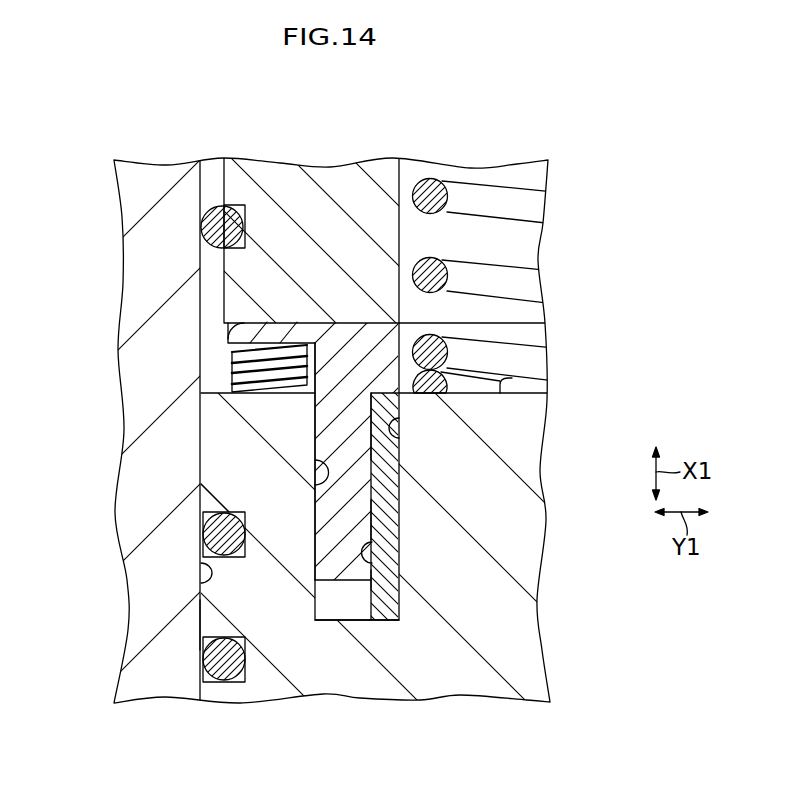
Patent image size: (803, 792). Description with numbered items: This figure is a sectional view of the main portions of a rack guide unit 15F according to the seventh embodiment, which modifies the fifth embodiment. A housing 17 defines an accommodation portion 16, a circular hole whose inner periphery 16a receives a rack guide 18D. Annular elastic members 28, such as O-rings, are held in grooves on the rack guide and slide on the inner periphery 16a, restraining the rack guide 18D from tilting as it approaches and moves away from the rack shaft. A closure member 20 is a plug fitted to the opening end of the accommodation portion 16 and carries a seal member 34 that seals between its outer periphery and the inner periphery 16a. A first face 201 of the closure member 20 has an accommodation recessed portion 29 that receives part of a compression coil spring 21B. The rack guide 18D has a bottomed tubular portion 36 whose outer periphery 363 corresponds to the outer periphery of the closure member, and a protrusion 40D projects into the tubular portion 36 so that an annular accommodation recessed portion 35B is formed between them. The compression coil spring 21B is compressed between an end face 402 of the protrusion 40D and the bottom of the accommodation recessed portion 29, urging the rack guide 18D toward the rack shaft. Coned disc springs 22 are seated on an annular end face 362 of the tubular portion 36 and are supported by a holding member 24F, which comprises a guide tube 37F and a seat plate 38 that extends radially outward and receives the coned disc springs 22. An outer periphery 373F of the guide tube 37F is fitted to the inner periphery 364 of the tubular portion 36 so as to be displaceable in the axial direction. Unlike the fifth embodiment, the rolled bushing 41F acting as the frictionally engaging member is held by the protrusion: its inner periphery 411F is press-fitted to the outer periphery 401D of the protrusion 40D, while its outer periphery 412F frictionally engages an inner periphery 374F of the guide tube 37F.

The rack guide unit 15F is at (463, 153).
The accommodation portion 16 is at (212, 175).
The inner periphery of the accommodation portion 16a is at (200, 576).
The housing 17 is at (132, 186).
The rack guide 18D is at (200, 623).
The closure member 20 is at (335, 180).
The first face of the closure member 201 is at (228, 337).
The compression coil spring 21B is at (427, 188).
The coned disc spring 22 is at (232, 353).
The holding member 24F is at (373, 453).
The annular elastic member 28 is at (213, 534).
The accommodation recessed portion 29 is at (527, 245).
The seal member 34 is at (215, 227).
The annular accommodation recessed portion 35B is at (353, 610).
The tubular portion 36 is at (200, 513).
The end face of the tubular portion 362 is at (211, 393).
The outer periphery of the tubular portion 363 is at (317, 485).
The inner periphery of the tubular portion 364 is at (228, 493).
The guide tube 37F is at (355, 488).
The outer periphery of the guide tube 373F is at (315, 427).
The inner periphery of the guide tube 374F is at (373, 466).
The seat plate 38 is at (276, 336).
The protrusion 40D is at (510, 408).
The outer periphery of the protrusion 401D is at (402, 428).
The end face of the protrusion 402 is at (512, 378).
The rolled bushing 41F is at (373, 531).
The inner periphery of the rolled bushing 411F is at (373, 553).
The outer periphery of the rolled bushing 412F is at (373, 578).